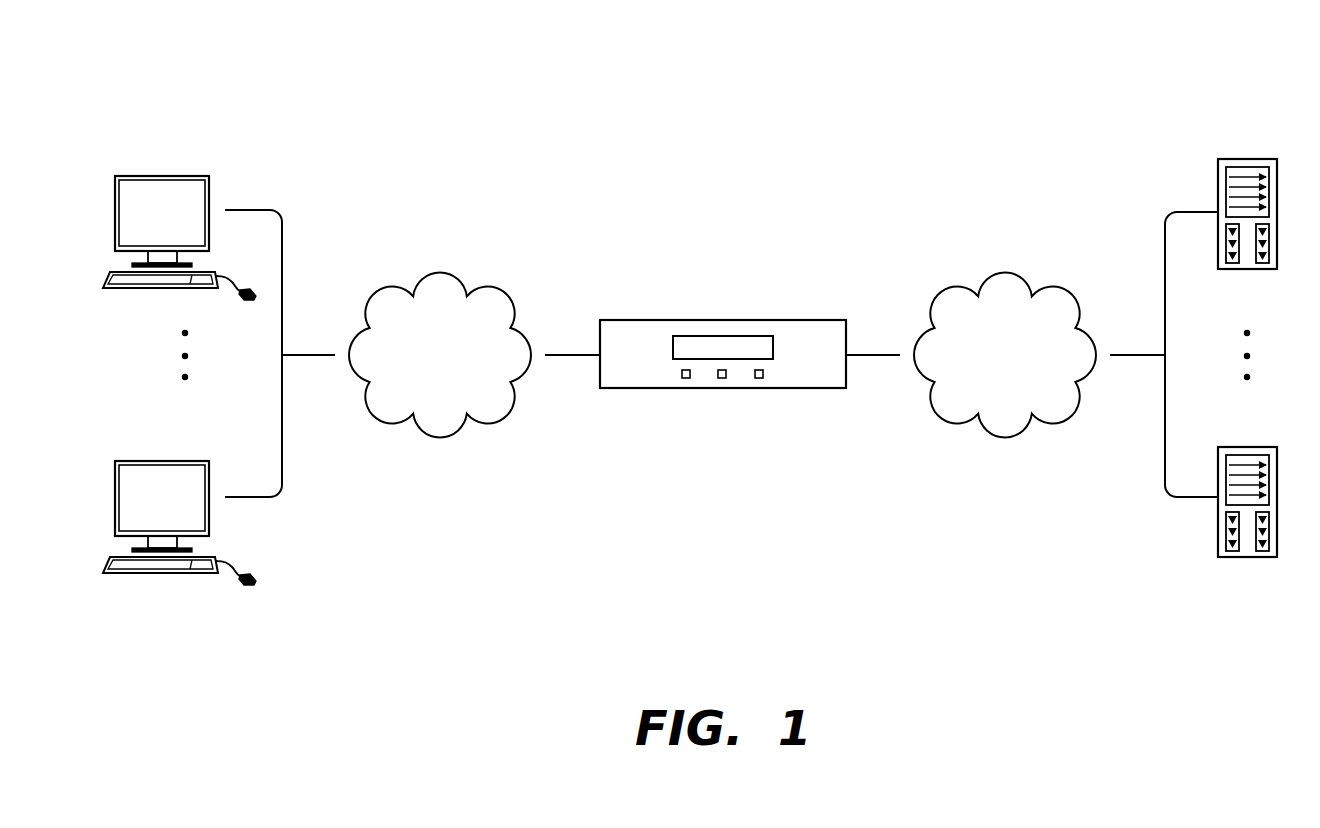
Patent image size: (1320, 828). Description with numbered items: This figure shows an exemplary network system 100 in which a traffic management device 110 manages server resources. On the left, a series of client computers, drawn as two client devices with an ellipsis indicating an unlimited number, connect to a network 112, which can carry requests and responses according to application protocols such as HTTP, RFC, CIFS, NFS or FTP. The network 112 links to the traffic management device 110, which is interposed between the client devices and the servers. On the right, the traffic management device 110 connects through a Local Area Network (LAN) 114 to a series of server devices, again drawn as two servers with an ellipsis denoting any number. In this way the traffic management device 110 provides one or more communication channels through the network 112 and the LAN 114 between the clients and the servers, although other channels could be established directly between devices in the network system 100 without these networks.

The network system 100 is at (978, 90).
The traffic management device 110 is at (725, 320).
The network 112 is at (465, 388).
The Local Area Network (LAN) 114 is at (1030, 388).